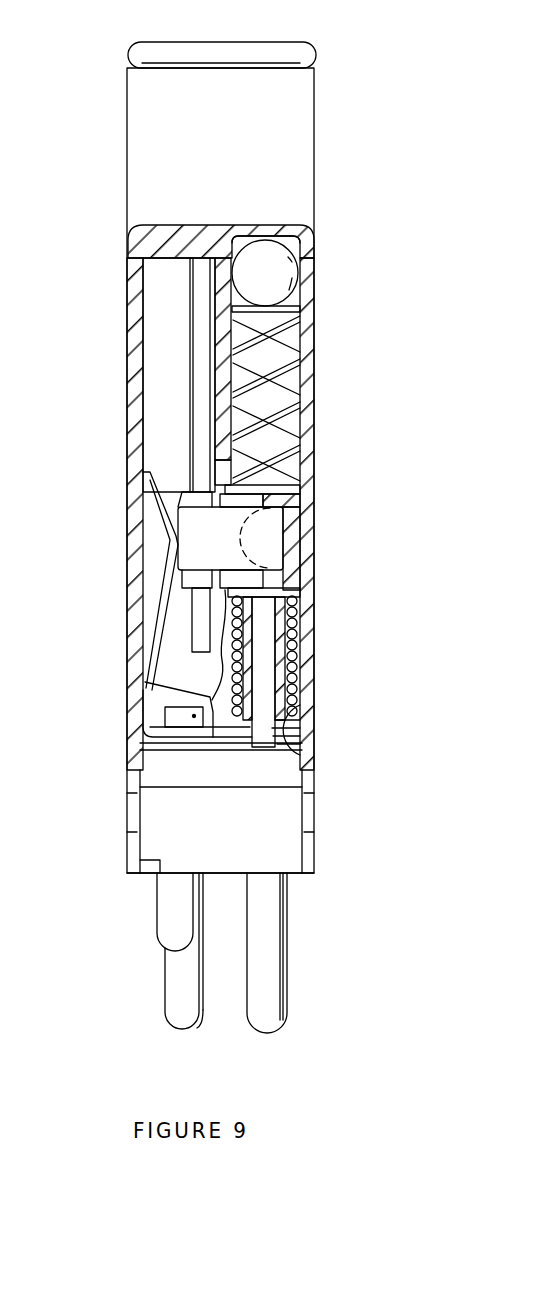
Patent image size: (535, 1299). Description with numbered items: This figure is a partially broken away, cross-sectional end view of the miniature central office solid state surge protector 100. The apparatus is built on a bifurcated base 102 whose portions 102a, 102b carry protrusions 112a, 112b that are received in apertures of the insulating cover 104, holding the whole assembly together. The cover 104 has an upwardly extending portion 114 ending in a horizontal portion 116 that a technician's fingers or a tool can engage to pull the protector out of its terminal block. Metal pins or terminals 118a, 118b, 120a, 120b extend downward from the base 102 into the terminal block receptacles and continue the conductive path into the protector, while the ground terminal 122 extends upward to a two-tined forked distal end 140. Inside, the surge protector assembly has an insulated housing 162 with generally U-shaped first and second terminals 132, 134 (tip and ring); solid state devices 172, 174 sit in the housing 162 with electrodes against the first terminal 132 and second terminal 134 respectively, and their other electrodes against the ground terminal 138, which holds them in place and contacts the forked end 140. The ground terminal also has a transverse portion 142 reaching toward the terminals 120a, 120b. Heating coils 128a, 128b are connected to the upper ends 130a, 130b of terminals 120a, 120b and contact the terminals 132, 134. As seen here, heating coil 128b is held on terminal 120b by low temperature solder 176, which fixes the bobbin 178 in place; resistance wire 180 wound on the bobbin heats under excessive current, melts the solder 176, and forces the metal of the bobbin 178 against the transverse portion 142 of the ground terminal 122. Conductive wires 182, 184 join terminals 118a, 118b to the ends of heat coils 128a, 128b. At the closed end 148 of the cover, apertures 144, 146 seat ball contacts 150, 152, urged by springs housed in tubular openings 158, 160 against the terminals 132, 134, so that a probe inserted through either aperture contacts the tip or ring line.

The miniature central office solid state surge protector 100 is at (118, 456).
The bifurcated base 102 is at (272, 850).
The base portion 102a is at (153, 862).
The base portion 102b is at (111, 903).
The cover 104 is at (127, 242).
The protrusion 112a is at (131, 792).
The protrusion 112b is at (312, 815).
The upwardly extending portion 114 is at (300, 123).
The horizontal portion 116 is at (167, 43).
The terminal 118a is at (165, 933).
The terminal 118b is at (115, 941).
The terminal 120a is at (267, 953).
The terminal 120b is at (330, 890).
The ground terminal 122 is at (168, 1012).
The heating coil 128a is at (357, 514).
The heating coil 128b is at (302, 661).
The end of terminal 130a is at (280, 579).
The end of terminal 130b is at (320, 580).
The first terminal 132 is at (292, 492).
The second terminal 134 is at (306, 406).
The ground terminal 138 is at (197, 532).
The forked shaped distal end 140 is at (168, 600).
The transverse portion 142 is at (160, 730).
The aperture 144 is at (273, 223).
The aperture 146 is at (314, 233).
The closed end 148 is at (170, 222).
The ball contact 150 is at (242, 310).
The ball contact 152 is at (257, 348).
The tubular opening 158 is at (222, 372).
The tubular opening 160 is at (132, 375).
The insulated housing 162 is at (300, 531).
The solid state device 172 is at (273, 551).
The solid state device 174 is at (318, 538).
The low temperature solder 176 is at (273, 740).
The bobbin 178 is at (293, 717).
The resistance wire 180 is at (295, 630).
The conductive wire 182 is at (208, 692).
The conductive wire 184 is at (124, 696).